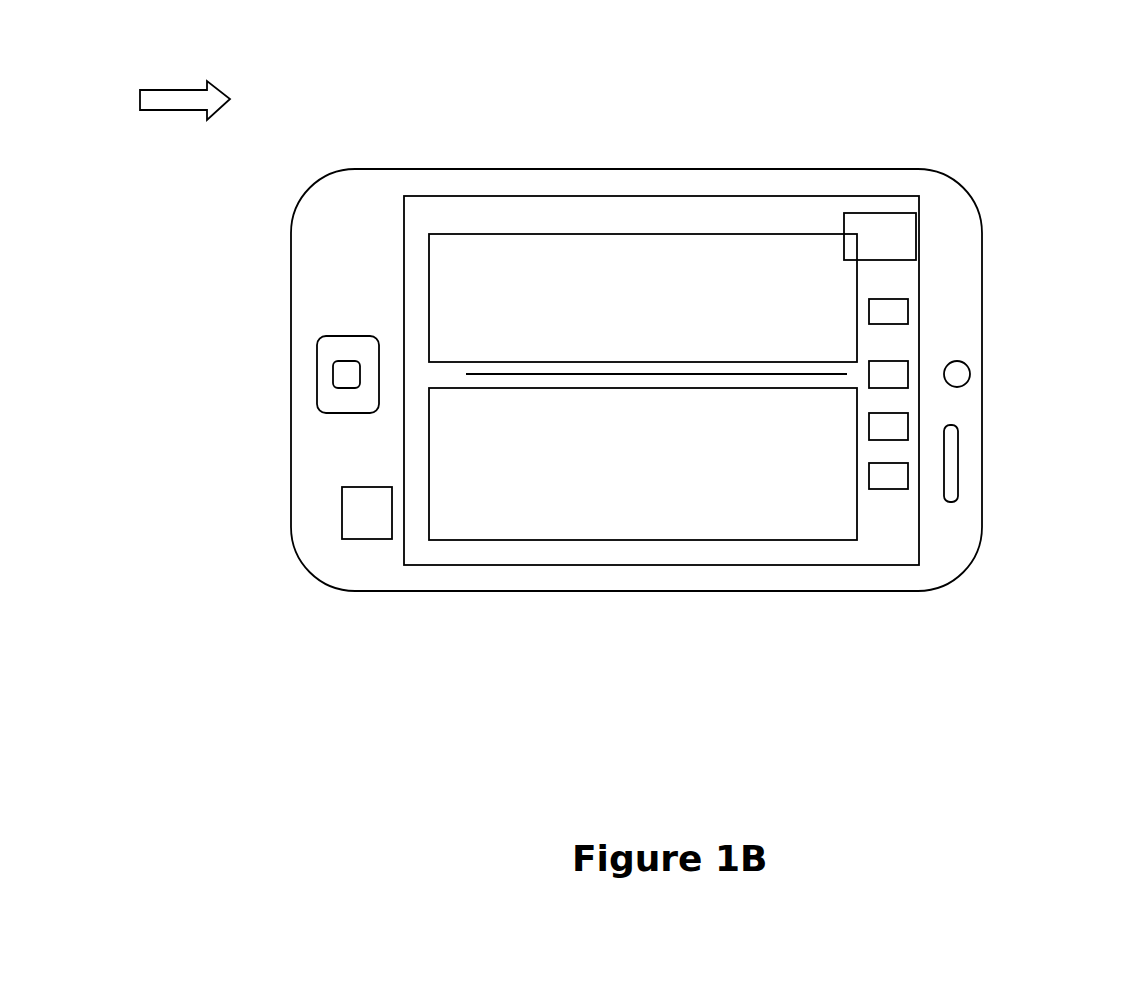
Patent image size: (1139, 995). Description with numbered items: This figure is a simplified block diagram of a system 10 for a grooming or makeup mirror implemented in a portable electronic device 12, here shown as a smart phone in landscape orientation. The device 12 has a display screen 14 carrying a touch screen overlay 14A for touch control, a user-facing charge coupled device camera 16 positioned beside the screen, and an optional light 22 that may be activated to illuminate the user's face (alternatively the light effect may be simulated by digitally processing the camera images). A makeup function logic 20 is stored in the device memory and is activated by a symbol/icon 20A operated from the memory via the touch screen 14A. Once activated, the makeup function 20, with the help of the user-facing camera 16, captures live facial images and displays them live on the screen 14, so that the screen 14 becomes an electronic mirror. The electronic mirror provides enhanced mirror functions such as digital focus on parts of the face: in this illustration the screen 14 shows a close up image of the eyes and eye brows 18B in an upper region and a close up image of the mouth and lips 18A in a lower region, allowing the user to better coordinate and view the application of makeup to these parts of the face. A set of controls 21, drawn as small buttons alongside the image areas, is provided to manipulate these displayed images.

The system 10 is at (157, 76).
The portable electronic device 12 is at (500, 167).
The display screen 14 is at (757, 193).
The touch screen overlay 14A is at (608, 222).
The user-facing charge coupled device camera 16 is at (960, 373).
The close up image of lips 18A is at (756, 466).
The close up image of eyes 18B is at (757, 284).
The makeup function logic 20 is at (378, 515).
The symbol/icon 20A is at (916, 230).
The controls 21 is at (897, 310).
The light 22 is at (961, 460).